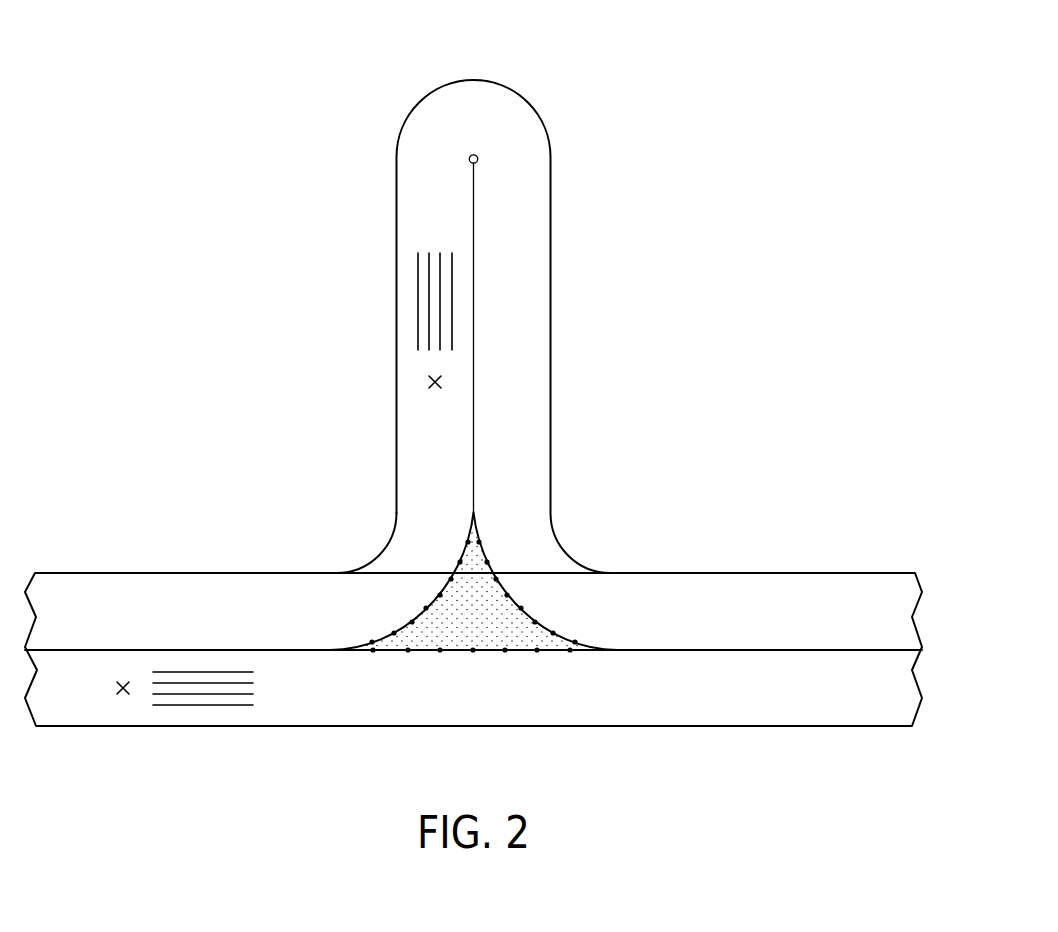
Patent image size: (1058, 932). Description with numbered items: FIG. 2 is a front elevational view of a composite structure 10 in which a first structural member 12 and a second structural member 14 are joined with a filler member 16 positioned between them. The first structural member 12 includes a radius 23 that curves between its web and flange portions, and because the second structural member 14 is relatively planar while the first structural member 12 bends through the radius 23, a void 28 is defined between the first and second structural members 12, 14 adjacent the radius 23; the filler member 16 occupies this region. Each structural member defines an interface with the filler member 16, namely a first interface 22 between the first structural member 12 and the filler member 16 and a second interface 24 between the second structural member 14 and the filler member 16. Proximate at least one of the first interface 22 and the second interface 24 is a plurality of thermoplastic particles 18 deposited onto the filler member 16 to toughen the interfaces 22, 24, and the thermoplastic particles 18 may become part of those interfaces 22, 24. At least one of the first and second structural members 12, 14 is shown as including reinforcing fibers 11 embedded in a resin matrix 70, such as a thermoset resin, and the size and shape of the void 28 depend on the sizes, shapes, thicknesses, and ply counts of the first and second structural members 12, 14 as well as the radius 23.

The composite structure 10 is at (724, 116).
The reinforcing fibers 11 is at (418, 291).
The first structural member 12 is at (551, 308).
The second structural member 14 is at (678, 705).
The filler member 16 is at (500, 610).
The thermoplastic particles 18 is at (440, 596).
The first interface 22 is at (391, 636).
The radius 23 is at (412, 631).
The second interface 24 is at (446, 650).
The void 28 is at (476, 581).
The resin matrix 70 is at (428, 383).